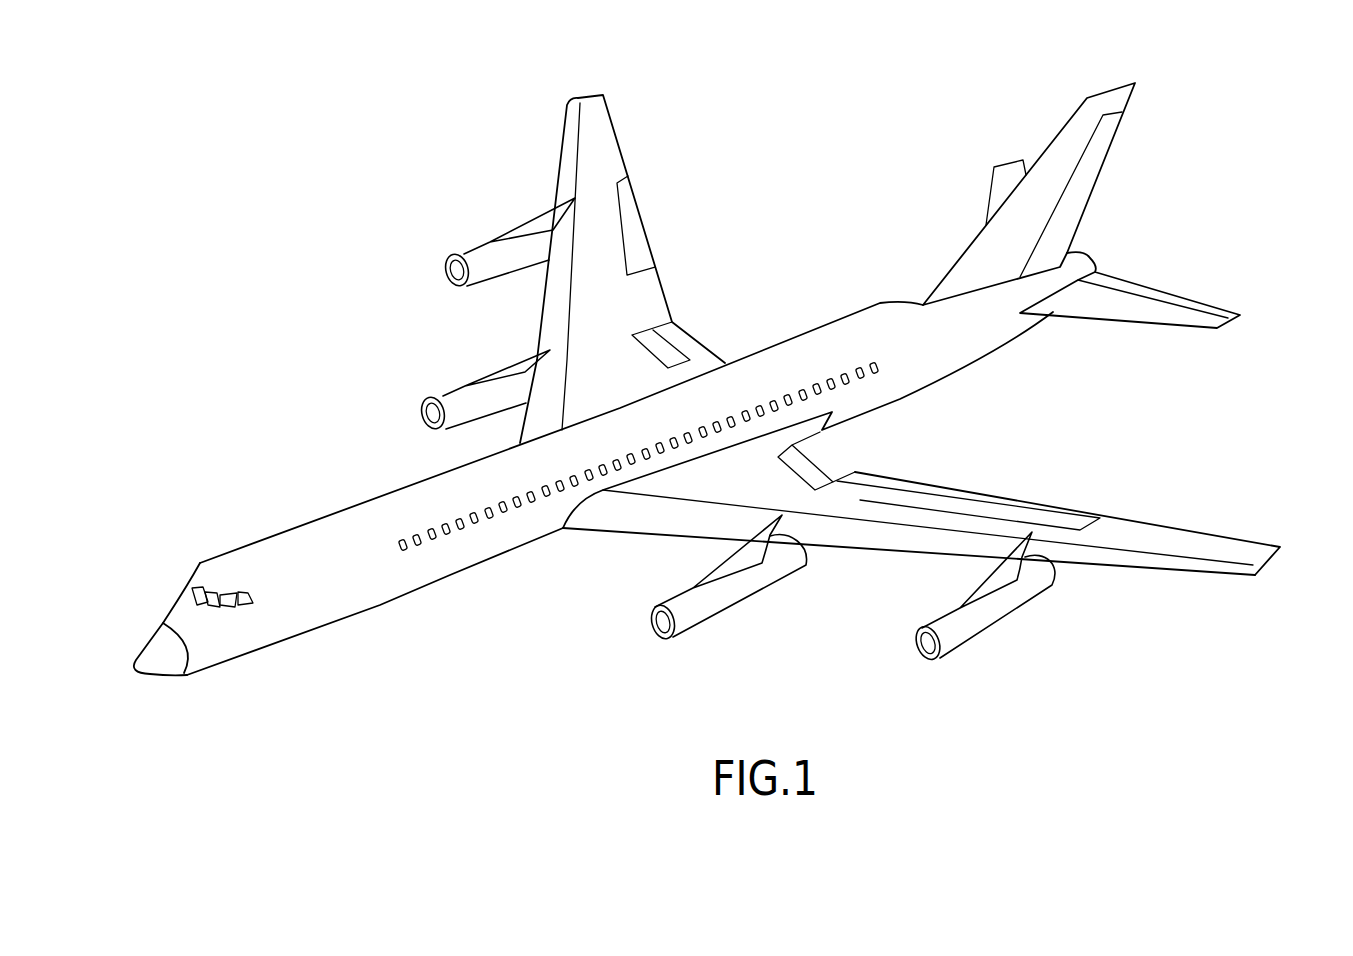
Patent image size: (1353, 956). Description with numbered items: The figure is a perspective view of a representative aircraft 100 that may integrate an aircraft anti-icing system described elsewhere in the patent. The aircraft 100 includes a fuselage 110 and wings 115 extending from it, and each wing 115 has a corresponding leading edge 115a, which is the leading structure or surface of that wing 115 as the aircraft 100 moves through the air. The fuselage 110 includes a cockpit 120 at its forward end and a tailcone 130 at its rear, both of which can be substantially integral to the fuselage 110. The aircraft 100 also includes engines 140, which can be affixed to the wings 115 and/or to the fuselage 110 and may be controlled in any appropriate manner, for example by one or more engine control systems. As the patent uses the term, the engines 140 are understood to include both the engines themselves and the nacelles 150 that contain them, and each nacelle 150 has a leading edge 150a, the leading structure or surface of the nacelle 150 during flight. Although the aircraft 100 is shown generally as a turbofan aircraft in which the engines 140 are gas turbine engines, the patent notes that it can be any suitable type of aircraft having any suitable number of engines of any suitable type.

The aircraft 100 is at (218, 178).
The fuselage 110 is at (468, 592).
The wings 115 is at (633, 173).
The leading edge 115a is at (1130, 567).
The cockpit 120 is at (192, 563).
The tailcone 130 is at (1053, 330).
The engines 140 is at (463, 353).
The nacelles 150 is at (942, 657).
The leading edge 150a is at (923, 653).